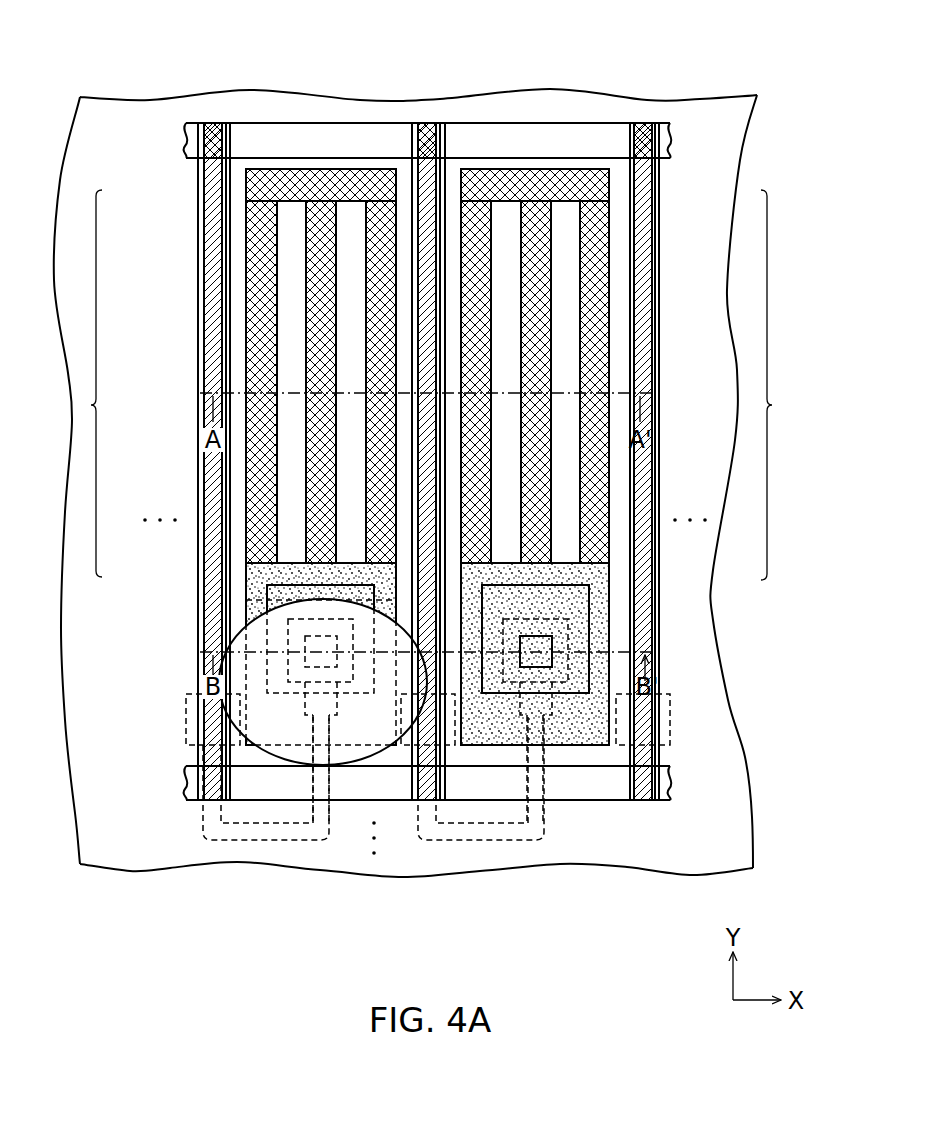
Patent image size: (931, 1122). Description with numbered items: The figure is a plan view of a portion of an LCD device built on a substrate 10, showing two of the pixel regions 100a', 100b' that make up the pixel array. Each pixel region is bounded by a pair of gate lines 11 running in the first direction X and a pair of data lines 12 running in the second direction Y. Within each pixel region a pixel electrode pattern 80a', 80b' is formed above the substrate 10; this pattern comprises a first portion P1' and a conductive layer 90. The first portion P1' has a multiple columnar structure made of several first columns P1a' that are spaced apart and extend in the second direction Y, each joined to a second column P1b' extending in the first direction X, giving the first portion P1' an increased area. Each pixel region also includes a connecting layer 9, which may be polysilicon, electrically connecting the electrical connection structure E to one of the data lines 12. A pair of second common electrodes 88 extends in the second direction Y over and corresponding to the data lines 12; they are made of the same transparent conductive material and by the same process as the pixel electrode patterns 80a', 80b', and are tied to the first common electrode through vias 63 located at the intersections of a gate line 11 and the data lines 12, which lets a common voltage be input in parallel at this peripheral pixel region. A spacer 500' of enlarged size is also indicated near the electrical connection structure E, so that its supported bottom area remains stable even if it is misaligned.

The substrate 10 is at (117, 147).
The gate lines 11 is at (494, 128).
The data lines 12 is at (229, 190).
The vias 63 is at (211, 123).
The second common electrodes 88 is at (206, 180).
The connecting layer 9 is at (265, 835).
The conductive layer 90 is at (267, 580).
The spacer 500' is at (277, 697).
The pixel region 100a' is at (535, 417).
The pixel region 100b' is at (321, 417).
The first portion P1' is at (432, 366).
The first columns P1a' is at (428, 382).
The second column P1b' is at (429, 195).
The pixel electrode pattern 80a' is at (795, 385).
The pixel electrode pattern 80b' is at (70, 383).
The electrical connection structure E is at (613, 617).